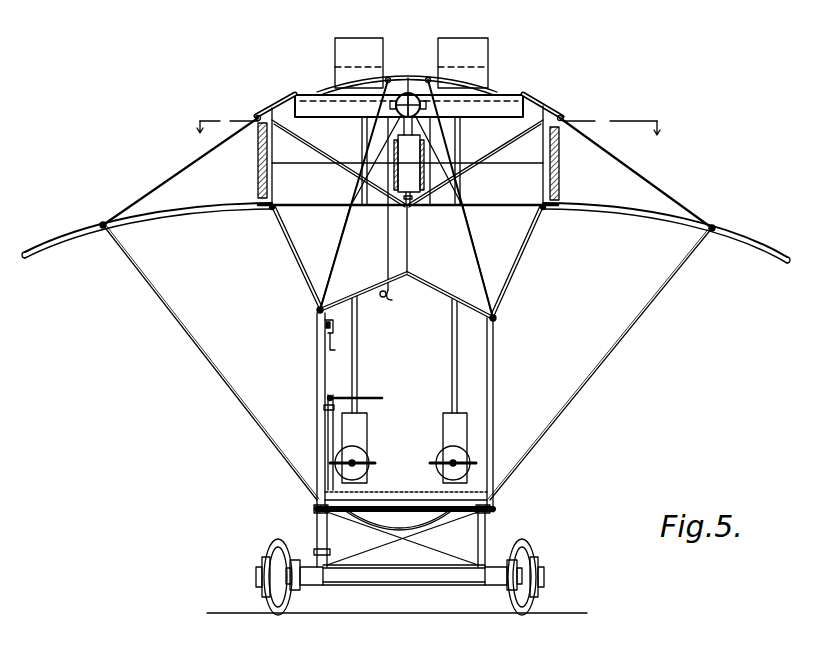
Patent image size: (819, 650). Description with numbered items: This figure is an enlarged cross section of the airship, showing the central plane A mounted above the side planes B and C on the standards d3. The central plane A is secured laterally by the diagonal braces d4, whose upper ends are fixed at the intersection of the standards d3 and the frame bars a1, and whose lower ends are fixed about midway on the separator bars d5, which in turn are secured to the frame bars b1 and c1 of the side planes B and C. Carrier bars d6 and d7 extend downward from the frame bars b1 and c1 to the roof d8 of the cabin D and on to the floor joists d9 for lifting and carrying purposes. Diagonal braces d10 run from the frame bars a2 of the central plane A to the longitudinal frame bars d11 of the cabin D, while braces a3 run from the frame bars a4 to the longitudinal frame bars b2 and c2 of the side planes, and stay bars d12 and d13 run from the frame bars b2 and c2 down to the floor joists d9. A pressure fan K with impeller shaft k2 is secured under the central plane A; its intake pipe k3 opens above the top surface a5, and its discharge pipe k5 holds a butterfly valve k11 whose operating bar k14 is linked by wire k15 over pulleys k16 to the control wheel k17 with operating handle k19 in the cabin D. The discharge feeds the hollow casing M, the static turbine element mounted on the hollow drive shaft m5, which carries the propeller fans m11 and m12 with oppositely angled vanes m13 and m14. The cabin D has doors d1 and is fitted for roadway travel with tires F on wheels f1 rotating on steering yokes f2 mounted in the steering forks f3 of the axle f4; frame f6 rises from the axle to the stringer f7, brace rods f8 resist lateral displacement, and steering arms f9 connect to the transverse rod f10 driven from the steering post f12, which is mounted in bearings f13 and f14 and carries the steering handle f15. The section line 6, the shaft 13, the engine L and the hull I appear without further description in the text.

The intake pipe k3 is at (336, 48).
The pressure fan K is at (342, 106).
The top surface of the central plane a5 is at (480, 82).
The central plane A is at (402, 76).
The frame bars of the central plane a2 is at (388, 78).
The discharge pipe k5 is at (430, 99).
The operating bar k14 is at (388, 104).
The hollow casing M is at (409, 161).
The shaft 13 is at (426, 142).
The butterfly valve k11 is at (386, 132).
The impeller shaft k2 is at (357, 257).
The diagonal braces d4 is at (315, 146).
The standards d3 is at (272, 182).
The separator bars d5 is at (332, 203).
The hollow drive shaft m5 is at (467, 172).
The frame bars of the central plane a4 is at (255, 113).
The frame bars of the central plane a1 is at (272, 105).
The section line 6- 6 is at (427, 131).
The propeller fan m11 is at (257, 157).
The vanes of the propeller fan m13 is at (258, 180).
The propeller fan m12 is at (560, 177).
The vanes of the propeller fan m14 is at (560, 188).
The braces a3 is at (170, 178).
The side plane B is at (213, 203).
The side plane C is at (635, 207).
The longitudinal frame bar of the side plane b2 is at (103, 223).
The longitudinal frame bar of the side plane c2 is at (715, 227).
The stay bar d12 is at (193, 343).
The stay bar d13 is at (623, 338).
The frame bar of the side plane b1 is at (277, 212).
The frame bar of the side plane c1 is at (533, 212).
The carrier bar d6 is at (293, 254).
The carrier bar d7 is at (521, 262).
The diagonal braces d10 is at (342, 240).
The roof of the cabin d8 is at (411, 277).
The longitudinal frame bars of the cabin d11 is at (308, 308).
The wire k15 is at (386, 296).
The pulleys k16 is at (388, 304).
The cabin D is at (405, 412).
The control wheel k17 is at (337, 332).
The operating handle k19 is at (337, 350).
The steering post f12 is at (337, 437).
The steering handle f15 is at (378, 397).
The bearing f14 is at (334, 408).
The engine L is at (442, 442).
The floor joists d9 is at (396, 500).
The hull bottom I is at (398, 520).
The stringer f7 is at (317, 503).
The frame f6 is at (315, 527).
The bearing f13 is at (327, 552).
The brace rods f8 is at (437, 547).
The transverse rod f10 is at (412, 568).
The axle f4 is at (380, 577).
The steering arms f9 is at (302, 584).
The steering yokes f2 is at (288, 590).
The steering forks f3 is at (305, 588).
The tires F is at (268, 542).
The wheels f1 is at (262, 572).
The doors d1 is at (495, 385).